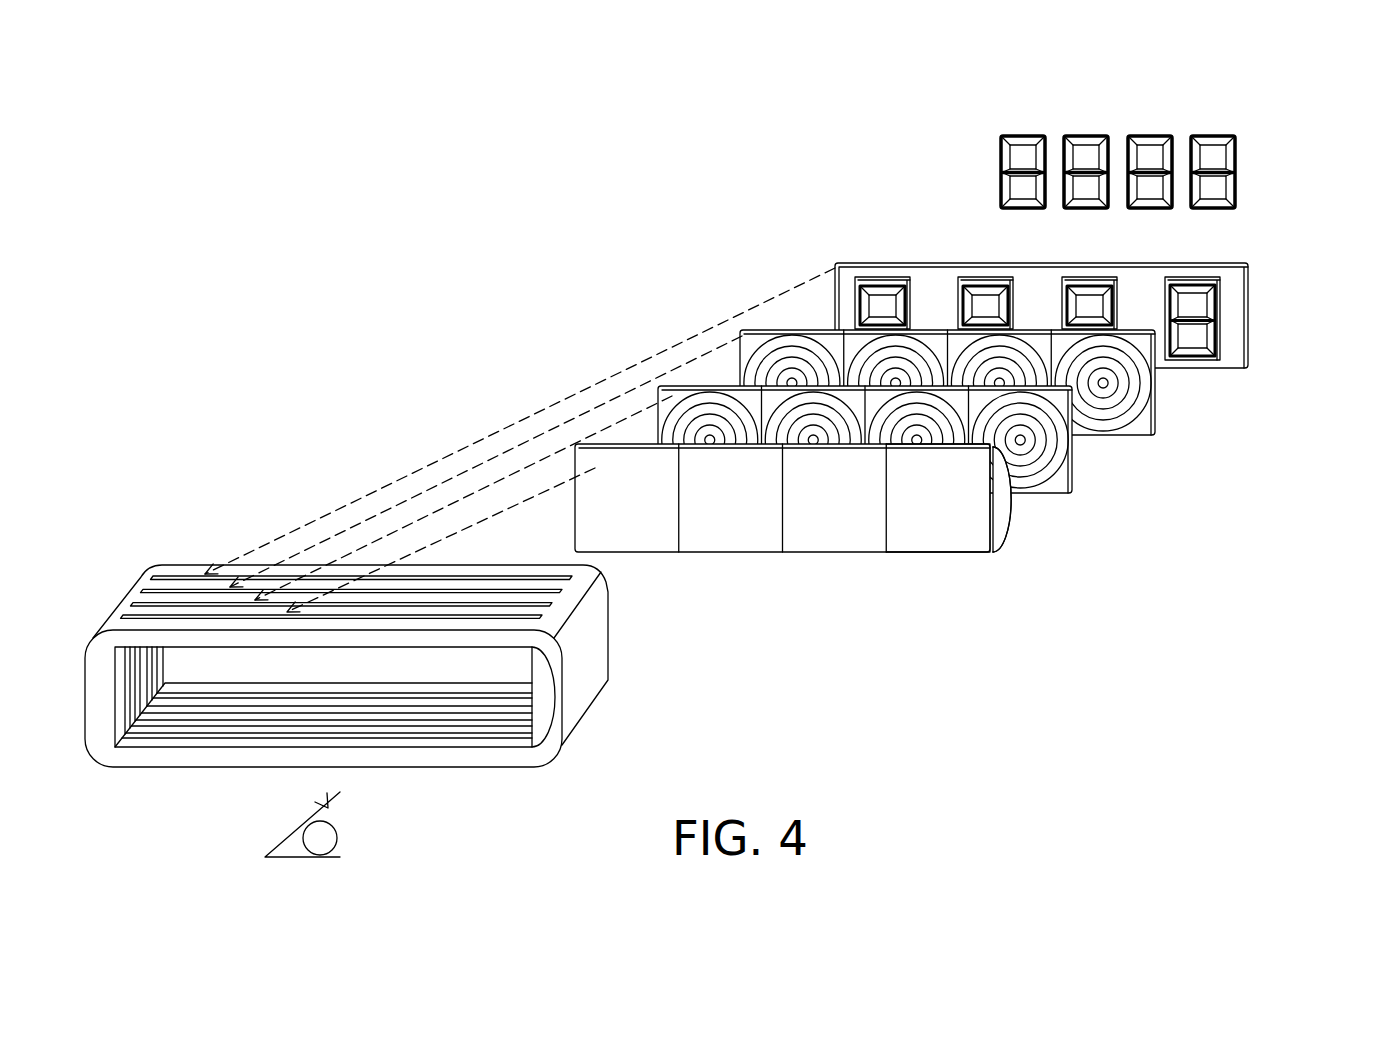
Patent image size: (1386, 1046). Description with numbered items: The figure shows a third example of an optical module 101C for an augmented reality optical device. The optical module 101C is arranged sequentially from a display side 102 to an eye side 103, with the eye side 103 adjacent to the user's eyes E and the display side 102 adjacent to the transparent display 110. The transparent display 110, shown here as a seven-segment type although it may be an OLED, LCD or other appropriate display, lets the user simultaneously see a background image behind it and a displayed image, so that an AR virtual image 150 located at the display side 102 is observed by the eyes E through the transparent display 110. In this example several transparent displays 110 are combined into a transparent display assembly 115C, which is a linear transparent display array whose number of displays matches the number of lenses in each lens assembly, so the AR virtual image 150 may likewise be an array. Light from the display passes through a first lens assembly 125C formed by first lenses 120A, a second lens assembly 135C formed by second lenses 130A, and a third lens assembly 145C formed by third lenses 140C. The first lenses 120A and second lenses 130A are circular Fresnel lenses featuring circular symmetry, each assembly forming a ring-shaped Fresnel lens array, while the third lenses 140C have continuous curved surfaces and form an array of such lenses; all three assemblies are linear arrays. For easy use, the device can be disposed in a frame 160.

The AR virtual image 150 is at (1027, 136).
The display side 102 is at (1245, 97).
The transparent display 110 is at (1085, 265).
The transparent display assembly 115C is at (1237, 292).
The first lens 120A is at (986, 333).
The first lens assembly 125C is at (1135, 403).
The second lens 130A is at (903, 390).
The second lens assembly 135C is at (1050, 460).
The third lens 140C is at (821, 446).
The third lens assembly 145C is at (967, 535).
The optical module 101C is at (1242, 790).
The frame 160 is at (583, 688).
The eyes E is at (310, 826).
The eye side 103 is at (170, 868).